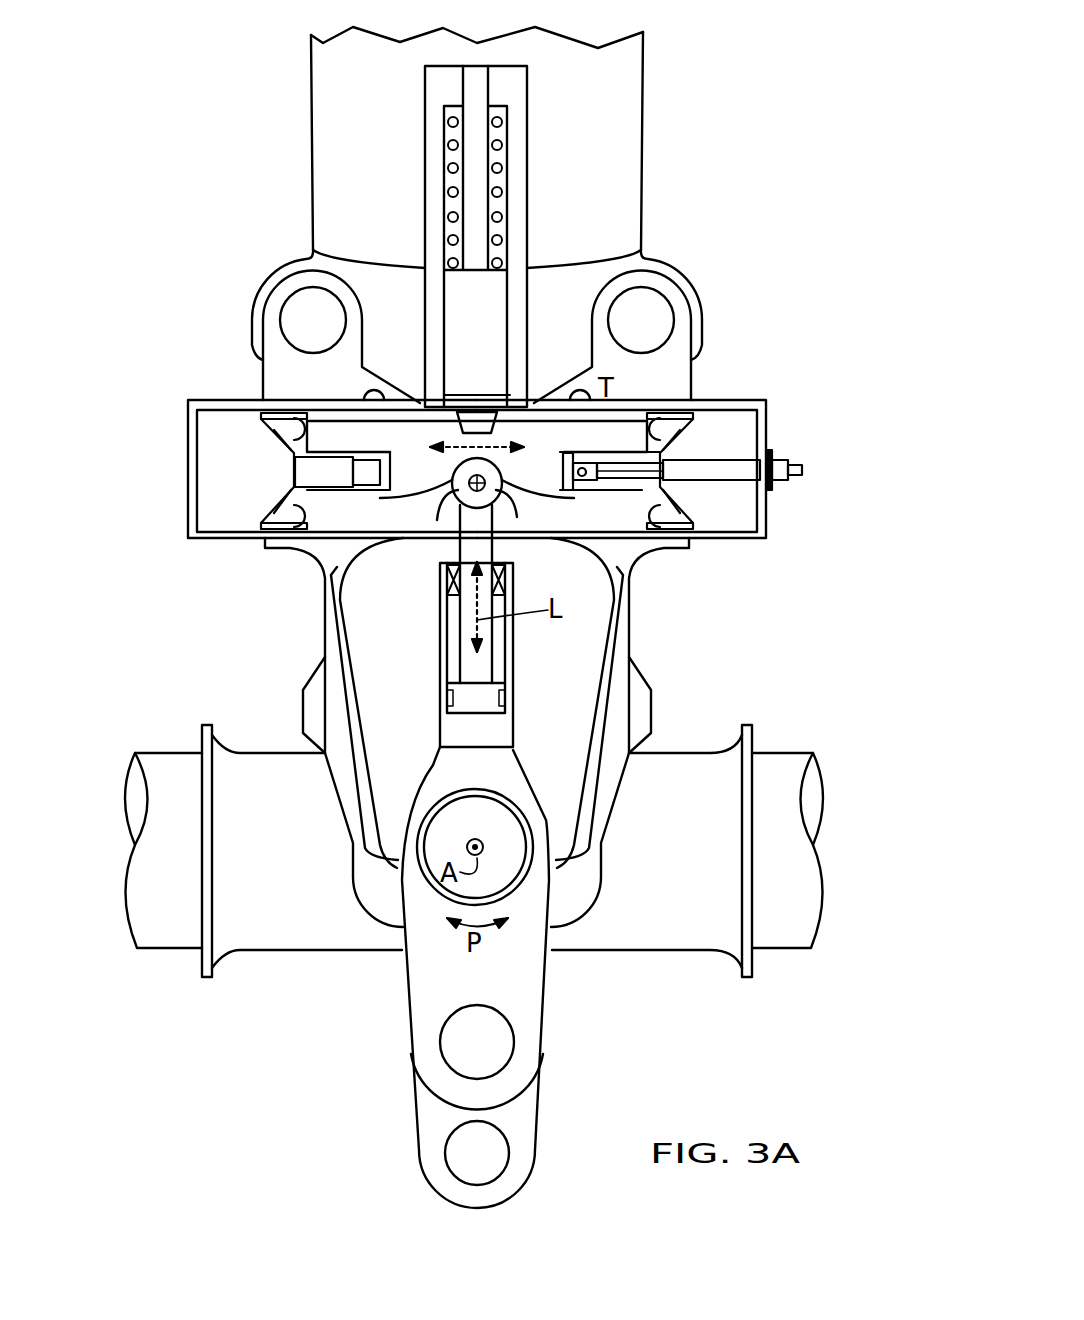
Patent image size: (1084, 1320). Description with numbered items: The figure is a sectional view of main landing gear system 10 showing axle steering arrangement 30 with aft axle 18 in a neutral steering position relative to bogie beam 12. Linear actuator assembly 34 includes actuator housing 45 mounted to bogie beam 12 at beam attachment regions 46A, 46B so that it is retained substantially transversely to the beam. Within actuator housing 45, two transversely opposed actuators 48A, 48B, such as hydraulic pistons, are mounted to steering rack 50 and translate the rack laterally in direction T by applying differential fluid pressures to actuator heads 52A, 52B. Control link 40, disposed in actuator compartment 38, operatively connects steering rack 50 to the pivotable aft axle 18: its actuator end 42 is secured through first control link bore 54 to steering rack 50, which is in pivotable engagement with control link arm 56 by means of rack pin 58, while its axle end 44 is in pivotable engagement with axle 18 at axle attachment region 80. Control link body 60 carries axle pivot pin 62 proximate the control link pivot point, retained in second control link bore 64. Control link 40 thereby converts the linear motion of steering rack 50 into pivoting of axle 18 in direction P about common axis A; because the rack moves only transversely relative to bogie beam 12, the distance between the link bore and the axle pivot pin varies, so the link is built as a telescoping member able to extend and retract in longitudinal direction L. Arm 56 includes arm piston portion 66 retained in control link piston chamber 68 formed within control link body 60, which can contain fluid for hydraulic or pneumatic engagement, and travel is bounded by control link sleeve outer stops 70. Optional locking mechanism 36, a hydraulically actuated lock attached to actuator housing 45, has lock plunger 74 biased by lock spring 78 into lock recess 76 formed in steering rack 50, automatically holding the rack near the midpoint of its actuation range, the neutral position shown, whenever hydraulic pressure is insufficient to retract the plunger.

The main landing gear system 10 is at (828, 163).
The bogie beam 12 is at (325, 140).
The aft axle 18 is at (130, 847).
The axle steering arrangement 30 is at (292, 631).
The linear actuator assembly 34 is at (783, 539).
The locking mechanism 36 is at (542, 128).
The actuator compartment 38 is at (565, 675).
The control link 40 is at (430, 676).
The actuator end 42 is at (497, 553).
The axle end 44 is at (556, 836).
The actuator housing 45 is at (232, 543).
The beam attachment region 46A is at (284, 302).
The beam attachment region 46B is at (671, 306).
The actuator 48A is at (226, 450).
The actuator 48B is at (729, 438).
The steering rack 50 is at (408, 475).
The actuator head 52A is at (295, 497).
The actuator head 52B is at (667, 504).
The first control link bore 54 is at (486, 483).
The control link arm 56 is at (472, 550).
The rack pin 58 is at (442, 493).
The control link body 60 is at (505, 778).
The axle pivot pin 62 is at (458, 810).
The second control link bore 64 is at (523, 883).
The arm piston portion 66 is at (468, 698).
The control link piston chamber 68 is at (440, 732).
The control link sleeve outer stops 70 is at (503, 585).
The lock plunger 74 is at (472, 410).
The lock recess 76 is at (482, 405).
The lock spring 78 is at (503, 240).
The axle attachment region 80 is at (393, 876).